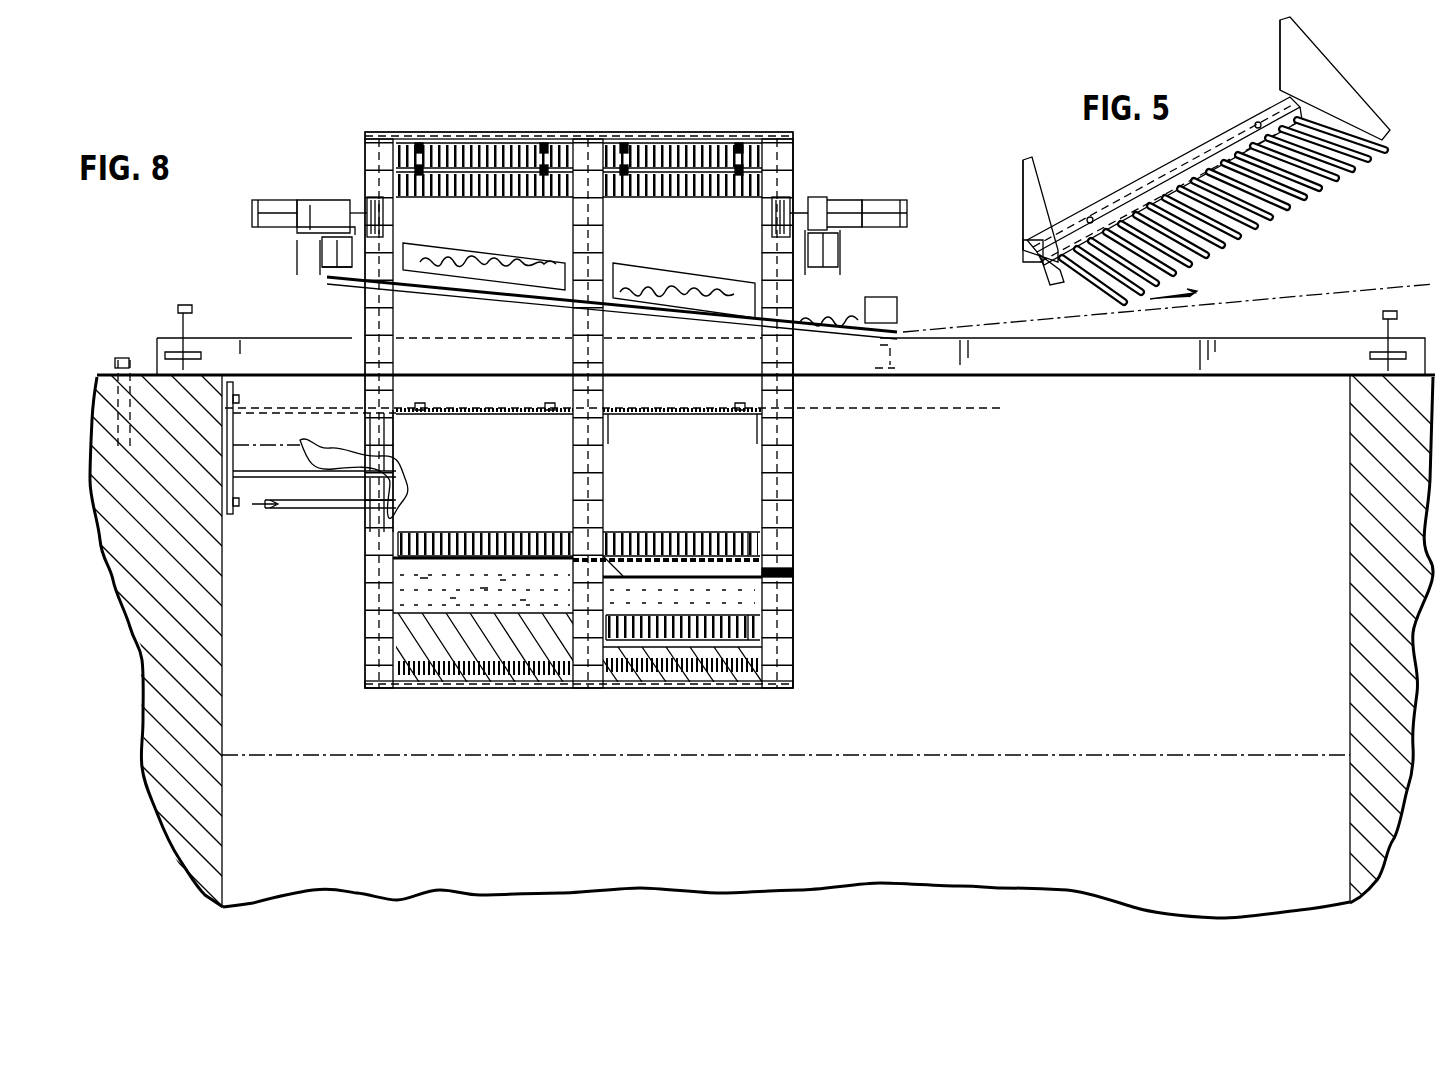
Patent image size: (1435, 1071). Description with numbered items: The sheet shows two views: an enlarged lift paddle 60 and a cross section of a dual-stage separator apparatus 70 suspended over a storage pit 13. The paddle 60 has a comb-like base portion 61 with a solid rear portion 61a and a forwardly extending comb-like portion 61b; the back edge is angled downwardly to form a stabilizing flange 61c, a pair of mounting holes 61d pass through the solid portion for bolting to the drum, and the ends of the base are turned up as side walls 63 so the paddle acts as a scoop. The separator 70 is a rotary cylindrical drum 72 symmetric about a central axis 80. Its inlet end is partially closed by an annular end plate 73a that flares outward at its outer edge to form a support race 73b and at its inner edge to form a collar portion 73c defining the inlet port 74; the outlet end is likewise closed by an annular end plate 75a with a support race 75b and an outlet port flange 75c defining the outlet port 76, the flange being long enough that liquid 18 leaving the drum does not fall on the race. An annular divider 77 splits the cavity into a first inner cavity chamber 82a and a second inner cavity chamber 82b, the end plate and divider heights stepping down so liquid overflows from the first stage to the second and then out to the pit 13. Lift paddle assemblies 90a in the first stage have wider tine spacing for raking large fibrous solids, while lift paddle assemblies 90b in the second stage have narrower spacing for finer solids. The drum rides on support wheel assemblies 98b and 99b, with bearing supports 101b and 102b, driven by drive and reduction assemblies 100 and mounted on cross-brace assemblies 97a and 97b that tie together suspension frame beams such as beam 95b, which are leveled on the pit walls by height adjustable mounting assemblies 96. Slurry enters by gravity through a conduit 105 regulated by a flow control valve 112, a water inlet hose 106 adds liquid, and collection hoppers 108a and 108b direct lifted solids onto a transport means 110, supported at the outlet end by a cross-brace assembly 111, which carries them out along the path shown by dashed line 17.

In FIG. 8, the storage pit 13 is at (213, 706).
In FIG. 8, the dashed line 17 is at (1045, 310).
In FIG. 8, the liquid 18 is at (800, 576).
In FIG. 5, the lift paddle 60 is at (1082, 151).
In FIG. 5, the base portion 61 is at (1268, 98).
In FIG. 5, the rear portion 61a is at (1225, 140).
In FIG. 5, the comb-like portion 61b is at (1280, 212).
In FIG. 5, the flange 61c is at (1025, 258).
In FIG. 5, the mounting holes 61d is at (1088, 216).
In FIG. 5, the side walls 63 is at (1030, 190).
In FIG. 8, the separator apparatus 70 is at (793, 515).
In FIG. 8, the cylindrical drum 72 is at (722, 690).
In FIG. 8, the annular end plate 73a is at (397, 598).
In FIG. 8, the support race 73b is at (393, 674).
In FIG. 8, the collar portion 73c is at (390, 567).
In FIG. 8, the inlet port 74 is at (356, 534).
In FIG. 8, the annular end plate 75a is at (793, 622).
In FIG. 8, the support race 75b is at (793, 668).
In FIG. 8, the outlet port flange 75c is at (778, 565).
In FIG. 8, the outlet port 76 is at (793, 475).
In FIG. 8, the annular divider 77 is at (580, 595).
In FIG. 8, the central axis 80 is at (944, 408).
In FIG. 8, the first inner cavity chamber 82a is at (473, 478).
In FIG. 8, the second inner cavity chamber 82b is at (663, 478).
In FIG. 8, the lift paddle assemblies 90a is at (483, 142).
In FIG. 8, the lift paddle assemblies 90b is at (645, 142).
In FIG. 8, the suspension frame beam 95b is at (1158, 366).
In FIG. 8, the height adjustable mounting assemblies 96 is at (193, 305).
In FIG. 8, the cross-brace assembly 97a is at (323, 258).
In FIG. 8, the cross-brace assembly 97b is at (838, 245).
In FIG. 8, the support wheel assembly 98b is at (366, 202).
In FIG. 8, the support wheel assembly 99b is at (783, 210).
In FIG. 8, the drive and reduction assemblies 100 is at (275, 205).
In FIG. 8, the bearing support 101b is at (288, 197).
In FIG. 8, the bearing support 102b is at (830, 202).
In FIG. 8, the conduit 105 is at (278, 410).
In FIG. 8, the water inlet hose 106 is at (298, 512).
In FIG. 8, the collection hopper 108a is at (476, 262).
In FIG. 8, the collection hopper 108b is at (684, 282).
In FIG. 8, the transport means 110 is at (856, 322).
In FIG. 8, the cross-brace assembly 111 is at (885, 380).
In FIG. 8, the flow control valve 112 is at (120, 360).